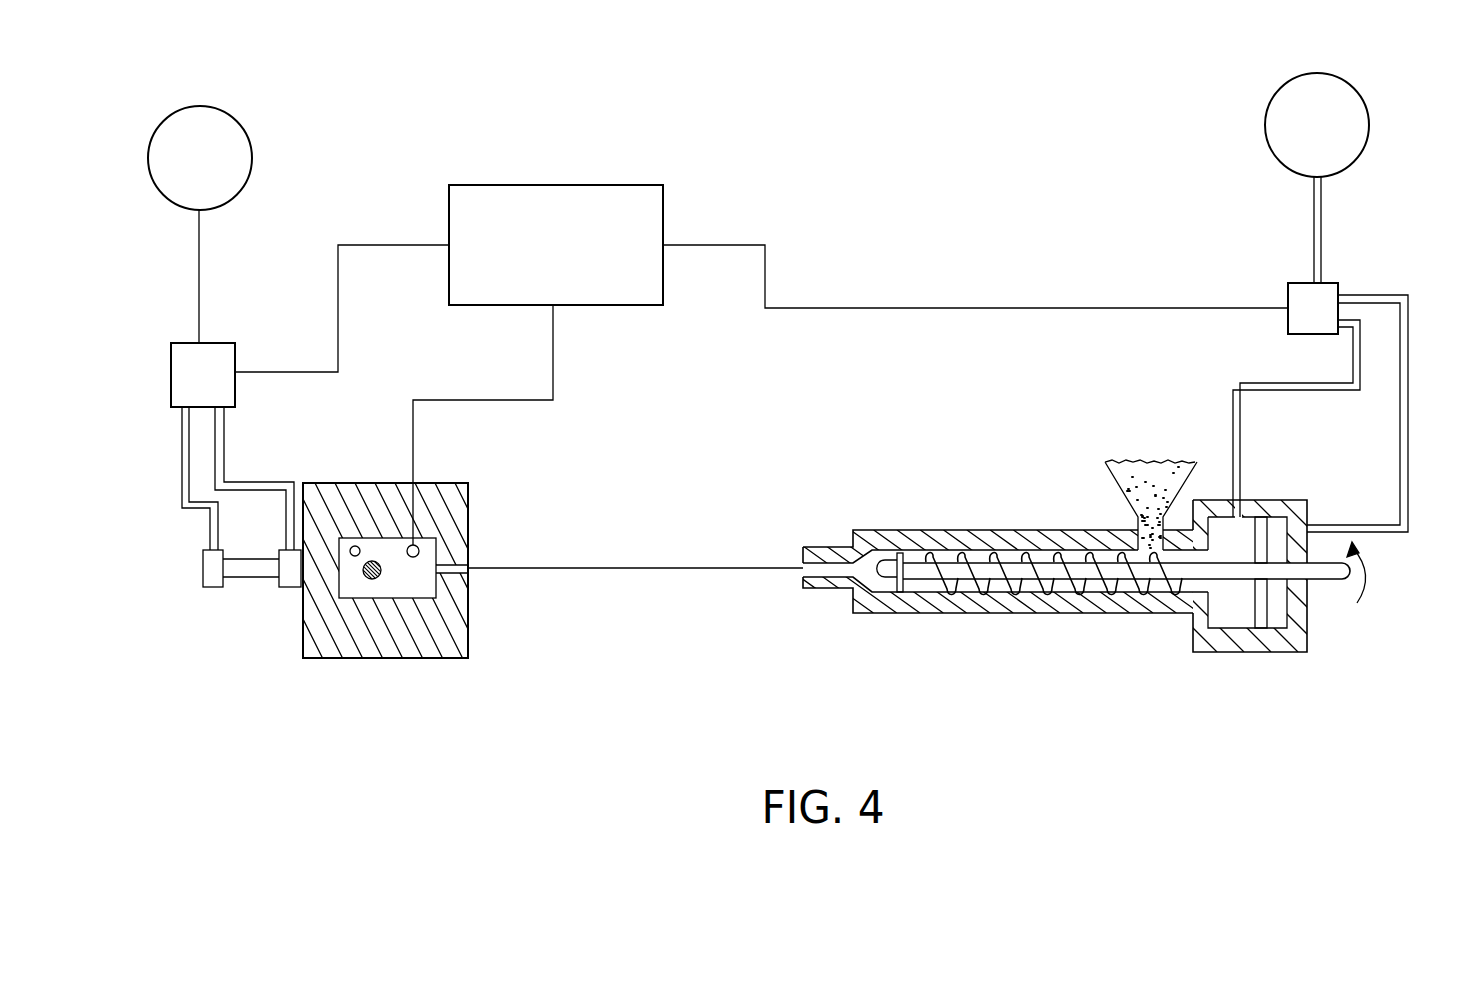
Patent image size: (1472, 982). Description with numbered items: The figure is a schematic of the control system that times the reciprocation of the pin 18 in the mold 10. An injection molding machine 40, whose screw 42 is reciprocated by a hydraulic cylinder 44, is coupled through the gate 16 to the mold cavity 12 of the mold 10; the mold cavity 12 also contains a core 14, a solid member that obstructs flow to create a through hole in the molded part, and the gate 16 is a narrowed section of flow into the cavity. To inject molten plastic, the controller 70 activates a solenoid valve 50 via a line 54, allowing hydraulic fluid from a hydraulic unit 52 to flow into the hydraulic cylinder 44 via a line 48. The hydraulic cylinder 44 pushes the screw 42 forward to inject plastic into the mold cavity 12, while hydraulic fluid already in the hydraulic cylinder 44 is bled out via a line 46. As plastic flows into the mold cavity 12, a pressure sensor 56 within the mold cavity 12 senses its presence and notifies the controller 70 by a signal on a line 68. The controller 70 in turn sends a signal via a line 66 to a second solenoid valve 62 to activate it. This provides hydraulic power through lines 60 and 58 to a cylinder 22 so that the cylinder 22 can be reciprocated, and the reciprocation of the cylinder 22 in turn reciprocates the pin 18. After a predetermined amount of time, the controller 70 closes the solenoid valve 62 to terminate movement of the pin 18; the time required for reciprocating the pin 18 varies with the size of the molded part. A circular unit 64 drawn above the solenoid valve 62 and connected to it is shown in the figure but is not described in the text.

The mold 10 is at (503, 594).
The mold cavity 12 is at (353, 590).
The core 14 is at (381, 575).
The gate 16 is at (465, 582).
The pin 18 is at (352, 546).
The cylinder 22 is at (240, 582).
The injection molding machine 40 is at (960, 530).
The screw 42 is at (928, 572).
The hydraulic cylinder 44 is at (1237, 613).
The line 46 is at (1305, 392).
The line 48 is at (1408, 378).
The solenoid valve 50 is at (1340, 287).
The hydraulic unit 52 is at (1297, 142).
The line 54 is at (987, 308).
The pressure sensor 56 is at (420, 548).
The line 58 is at (224, 438).
The line 60 is at (182, 461).
The solenoid valve 62 is at (170, 345).
The pressure source 64 is at (183, 175).
The line 66 is at (388, 245).
The line 68 is at (553, 343).
The controller 70 is at (537, 276).